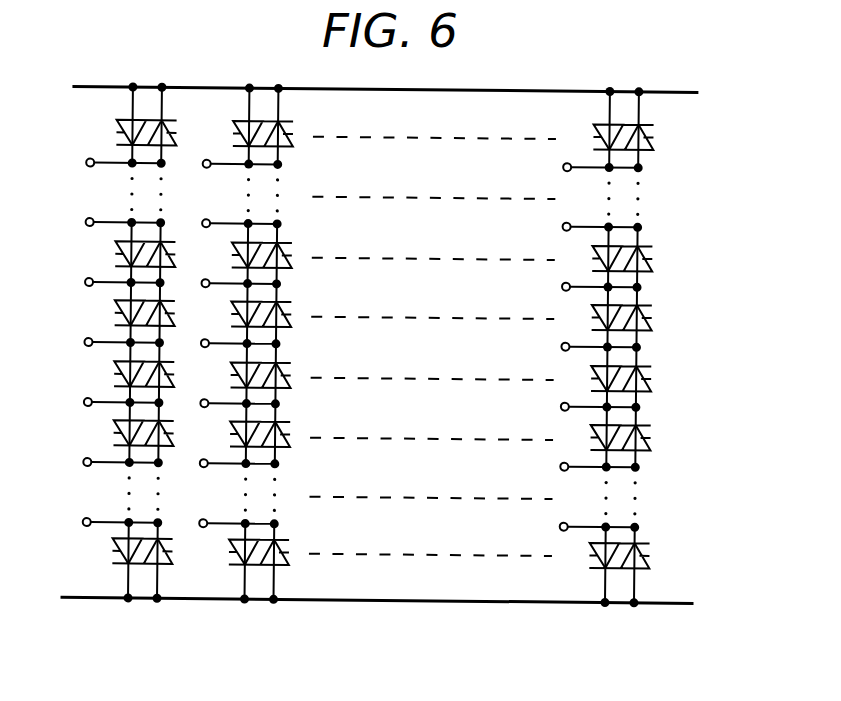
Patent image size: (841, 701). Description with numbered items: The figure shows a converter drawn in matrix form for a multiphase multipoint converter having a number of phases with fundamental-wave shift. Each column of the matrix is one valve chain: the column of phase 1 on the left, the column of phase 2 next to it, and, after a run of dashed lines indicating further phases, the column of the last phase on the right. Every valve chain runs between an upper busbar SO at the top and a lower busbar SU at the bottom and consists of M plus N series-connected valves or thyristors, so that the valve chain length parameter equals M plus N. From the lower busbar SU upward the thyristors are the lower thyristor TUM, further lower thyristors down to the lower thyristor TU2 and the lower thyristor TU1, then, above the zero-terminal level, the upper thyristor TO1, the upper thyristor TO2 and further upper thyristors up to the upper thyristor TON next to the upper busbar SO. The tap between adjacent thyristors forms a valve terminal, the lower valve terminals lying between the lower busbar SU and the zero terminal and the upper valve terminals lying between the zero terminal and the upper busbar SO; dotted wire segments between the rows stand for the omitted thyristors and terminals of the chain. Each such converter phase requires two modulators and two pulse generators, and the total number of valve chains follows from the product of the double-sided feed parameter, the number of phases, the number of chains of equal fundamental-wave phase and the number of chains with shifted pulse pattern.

The upper busbar SO is at (400, 93).
The lower busbar SU is at (392, 602).
The first phase valve chain 1 is at (124, 359).
The second phase valve chain 2 is at (245, 360).
The upper thyristor N TON is at (115, 131).
The upper thyristor 2 TO2 is at (114, 253).
The upper thyristor 1 TO1 is at (114, 312).
The lower thyristor 1 TU1 is at (113, 373).
The lower thyristor 2 TU2 is at (112, 432).
The lower thyristor M TUM is at (108, 550).